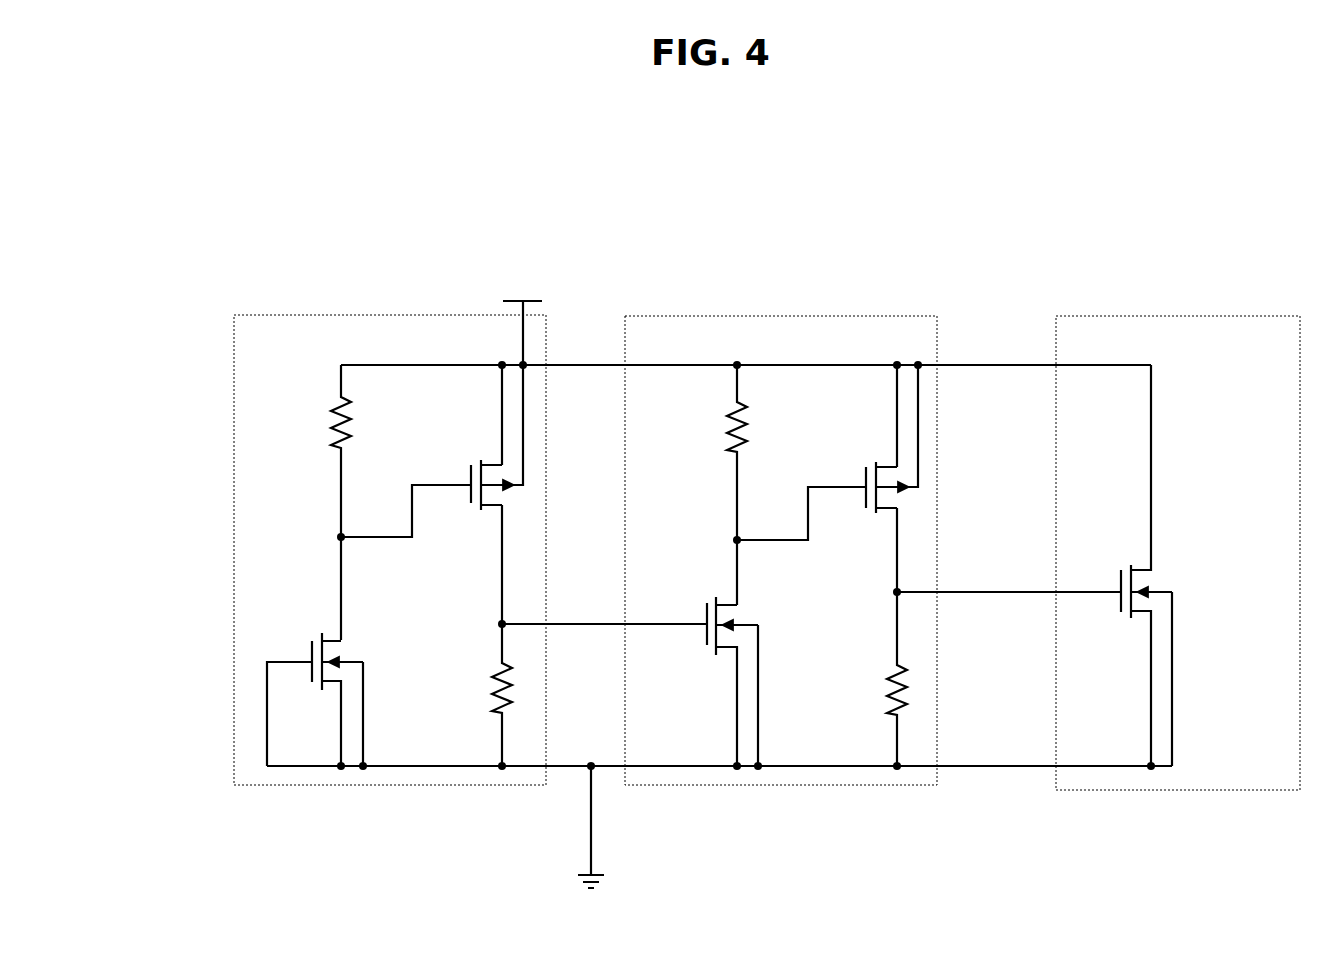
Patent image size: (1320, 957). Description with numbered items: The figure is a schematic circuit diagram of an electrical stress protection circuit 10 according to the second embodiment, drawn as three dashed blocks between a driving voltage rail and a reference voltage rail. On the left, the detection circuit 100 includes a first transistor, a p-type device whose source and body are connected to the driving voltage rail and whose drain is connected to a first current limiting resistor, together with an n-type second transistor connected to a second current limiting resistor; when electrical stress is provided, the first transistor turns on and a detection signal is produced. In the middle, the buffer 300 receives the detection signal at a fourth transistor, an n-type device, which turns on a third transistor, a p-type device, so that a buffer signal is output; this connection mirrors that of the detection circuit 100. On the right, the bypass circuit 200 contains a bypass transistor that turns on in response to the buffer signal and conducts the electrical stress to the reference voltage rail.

The electrical stress protection circuit 10 is at (212, 217).
The detection circuit 100 is at (414, 550).
The buffer 300 is at (781, 550).
The bypass circuit 200 is at (1178, 553).